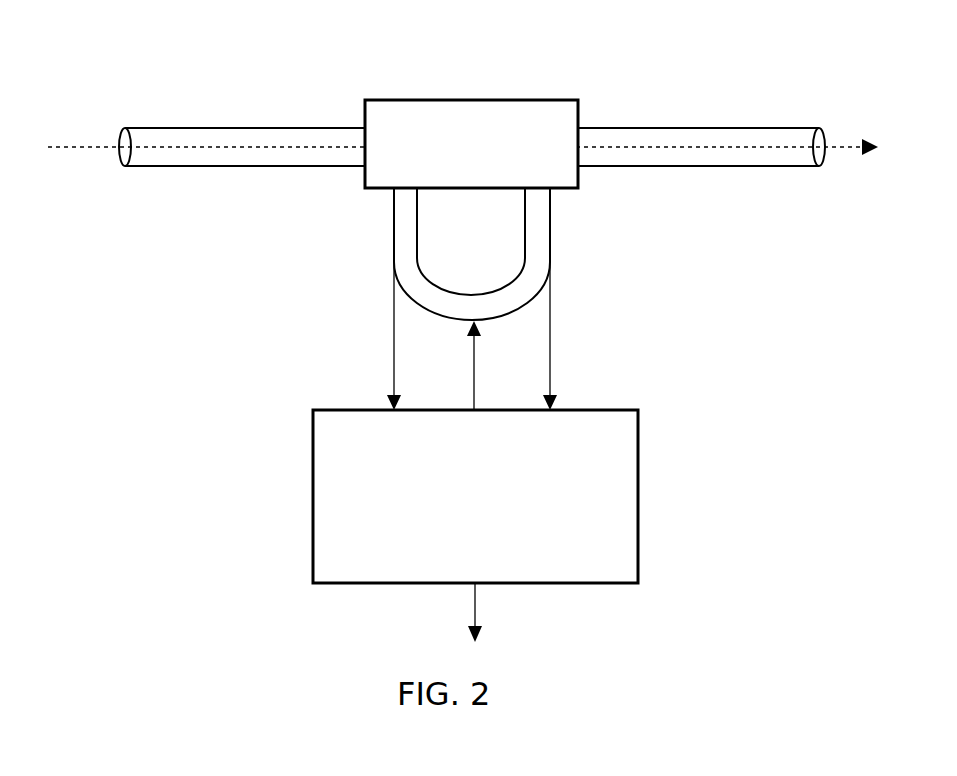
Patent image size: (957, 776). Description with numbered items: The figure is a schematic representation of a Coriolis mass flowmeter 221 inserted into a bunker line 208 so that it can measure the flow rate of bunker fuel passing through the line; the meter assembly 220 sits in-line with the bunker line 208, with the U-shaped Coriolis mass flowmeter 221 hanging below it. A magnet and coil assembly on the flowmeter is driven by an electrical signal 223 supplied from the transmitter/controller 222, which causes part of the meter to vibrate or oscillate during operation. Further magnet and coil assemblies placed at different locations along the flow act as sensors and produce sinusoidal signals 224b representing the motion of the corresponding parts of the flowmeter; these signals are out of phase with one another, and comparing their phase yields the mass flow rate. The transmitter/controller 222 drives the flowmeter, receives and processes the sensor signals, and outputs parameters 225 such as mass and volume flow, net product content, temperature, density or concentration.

The bunker line 208 is at (463, 177).
The flow sensor assembly 220 is at (365, 72).
The Coriolis mass flowmeter 221 is at (504, 254).
The transmitter/controller 222 is at (475, 496).
The electrical signal 223 is at (501, 365).
The sinusoidal signal 224b is at (467, 336).
The parameters 225 is at (505, 617).